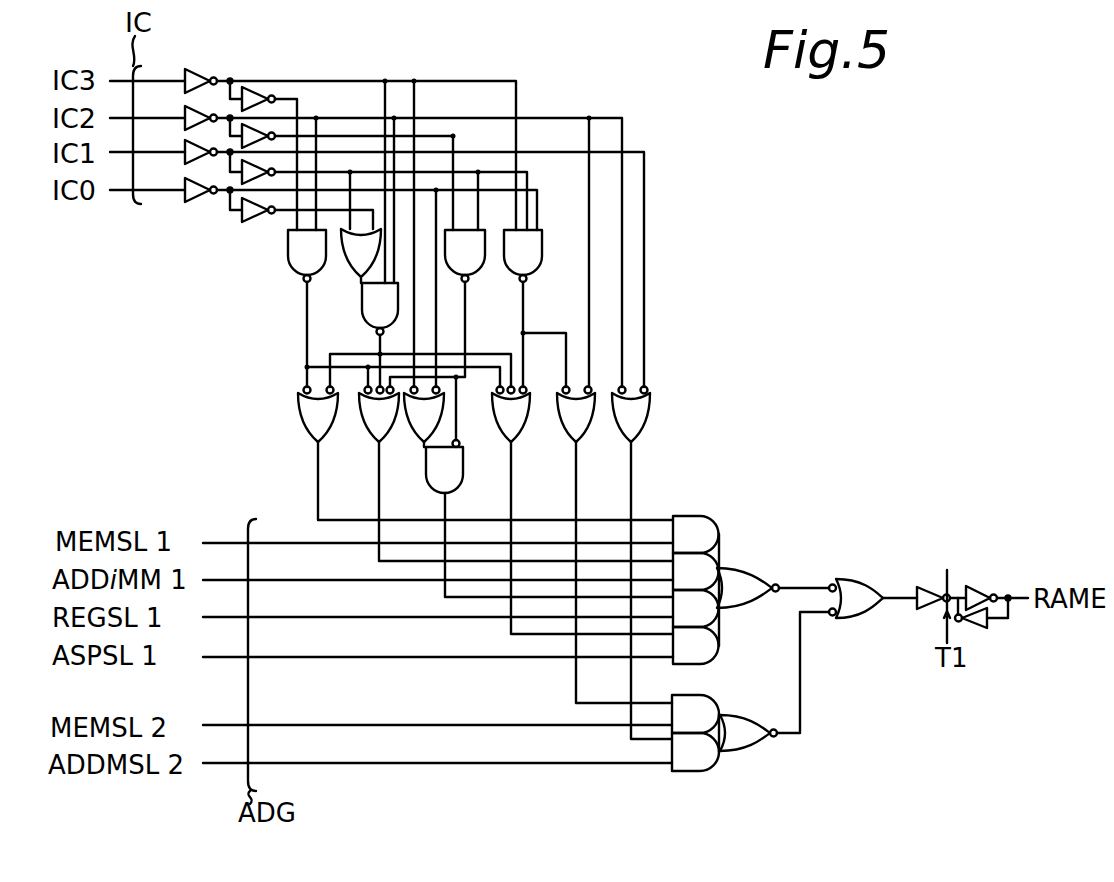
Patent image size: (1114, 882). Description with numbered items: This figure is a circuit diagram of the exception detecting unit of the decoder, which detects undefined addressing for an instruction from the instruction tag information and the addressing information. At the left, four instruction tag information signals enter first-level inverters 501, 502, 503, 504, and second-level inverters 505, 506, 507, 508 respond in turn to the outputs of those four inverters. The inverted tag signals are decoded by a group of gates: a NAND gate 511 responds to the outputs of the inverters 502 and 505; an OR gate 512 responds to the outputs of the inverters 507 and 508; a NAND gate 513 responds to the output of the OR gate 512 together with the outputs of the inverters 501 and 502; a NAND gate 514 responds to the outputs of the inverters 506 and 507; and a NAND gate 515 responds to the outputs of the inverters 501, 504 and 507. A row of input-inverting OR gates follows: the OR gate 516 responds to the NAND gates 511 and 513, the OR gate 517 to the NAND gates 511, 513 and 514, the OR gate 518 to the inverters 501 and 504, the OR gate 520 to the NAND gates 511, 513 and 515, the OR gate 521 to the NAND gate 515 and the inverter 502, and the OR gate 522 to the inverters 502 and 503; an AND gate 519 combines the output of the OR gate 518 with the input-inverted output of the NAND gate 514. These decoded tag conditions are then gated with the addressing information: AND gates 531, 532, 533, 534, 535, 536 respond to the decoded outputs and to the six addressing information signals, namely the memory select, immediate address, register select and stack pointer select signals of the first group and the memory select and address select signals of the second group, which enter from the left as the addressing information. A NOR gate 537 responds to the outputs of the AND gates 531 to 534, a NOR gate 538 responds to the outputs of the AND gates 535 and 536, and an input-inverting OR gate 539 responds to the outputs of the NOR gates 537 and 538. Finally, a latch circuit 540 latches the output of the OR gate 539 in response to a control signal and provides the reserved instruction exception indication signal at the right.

The inverter 501 is at (203, 74).
The inverter 502 is at (185, 110).
The inverter 503 is at (183, 162).
The inverter 504 is at (188, 201).
The inverter 505 is at (250, 91).
The inverter 506 is at (258, 126).
The inverter 507 is at (244, 186).
The inverter 508 is at (266, 222).
The NAND gate 511 is at (292, 268).
The OR gate 512 is at (353, 252).
The NAND gate 513 is at (372, 310).
The NAND gate 514 is at (478, 260).
The NAND gate 515 is at (538, 260).
The OR gate of input inverting type 516 is at (312, 410).
The OR gate of input inverting type 517 is at (366, 428).
The OR gate of input inverting type 518 is at (418, 430).
The AND gate 519 is at (458, 472).
The OR gate of input inverting type 520 is at (520, 425).
The OR gate of input inverting type 521 is at (590, 428).
The OR gate of input inverting type 522 is at (648, 428).
The AND gate 531 is at (698, 527).
The AND gate 532 is at (713, 572).
The AND gate 533 is at (721, 607).
The AND gate 534 is at (710, 647).
The AND gate 535 is at (682, 713).
The AND gate 536 is at (700, 758).
The NOR gate 537 is at (762, 577).
The NOR gate 538 is at (750, 743).
The OR gate of input inverting type 539 is at (852, 582).
The latch circuit 540 is at (973, 577).